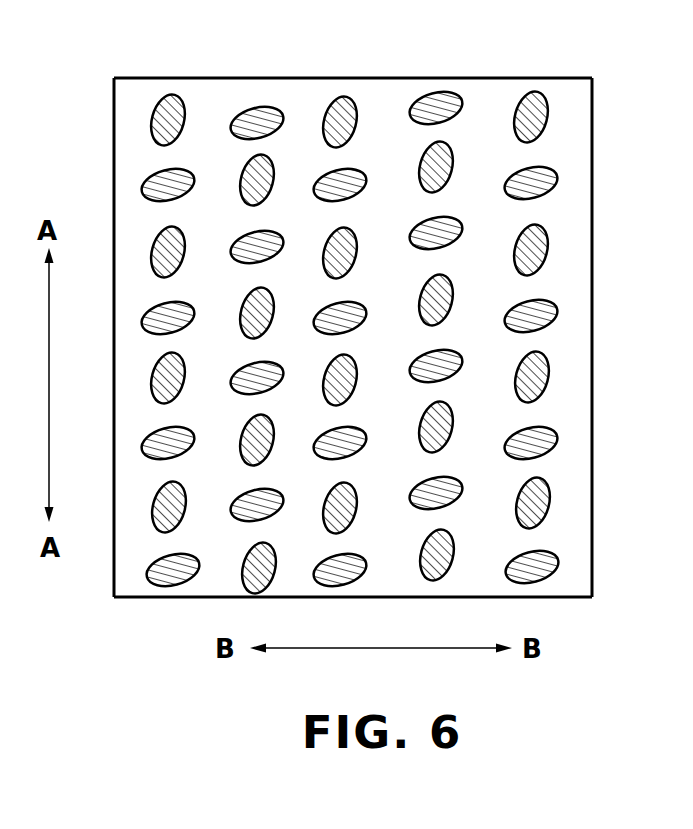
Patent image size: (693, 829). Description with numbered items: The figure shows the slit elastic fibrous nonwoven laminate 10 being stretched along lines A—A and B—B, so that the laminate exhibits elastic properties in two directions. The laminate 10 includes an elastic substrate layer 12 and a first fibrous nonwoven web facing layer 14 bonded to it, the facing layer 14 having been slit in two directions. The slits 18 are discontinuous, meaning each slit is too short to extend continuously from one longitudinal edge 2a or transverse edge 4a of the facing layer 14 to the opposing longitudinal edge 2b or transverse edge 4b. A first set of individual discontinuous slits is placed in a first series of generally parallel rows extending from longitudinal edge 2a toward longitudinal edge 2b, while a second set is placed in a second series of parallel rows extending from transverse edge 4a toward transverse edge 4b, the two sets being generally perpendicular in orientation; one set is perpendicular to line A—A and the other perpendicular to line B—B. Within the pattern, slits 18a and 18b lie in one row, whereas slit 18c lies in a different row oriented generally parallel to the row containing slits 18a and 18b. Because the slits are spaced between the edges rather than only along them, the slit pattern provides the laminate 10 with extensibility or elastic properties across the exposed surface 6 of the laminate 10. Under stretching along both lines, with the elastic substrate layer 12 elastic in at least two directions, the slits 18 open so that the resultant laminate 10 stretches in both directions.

The elastic fibrous nonwoven laminate 10 is at (357, 346).
The elastic substrate layer 12 is at (255, 124).
The first fibrous nonwoven web facing layer 14 is at (357, 346).
The slits 18 is at (350, 300).
The slit 18a is at (243, 190).
The slit 18b is at (237, 234).
The slit 18c is at (326, 243).
The longitudinal edge 2a is at (480, 78).
The opposing longitudinal edge 2b is at (172, 599).
The transverse edge 4a is at (113, 193).
The opposing transverse edge 4b is at (593, 281).
The exposed surface 6 is at (397, 300).